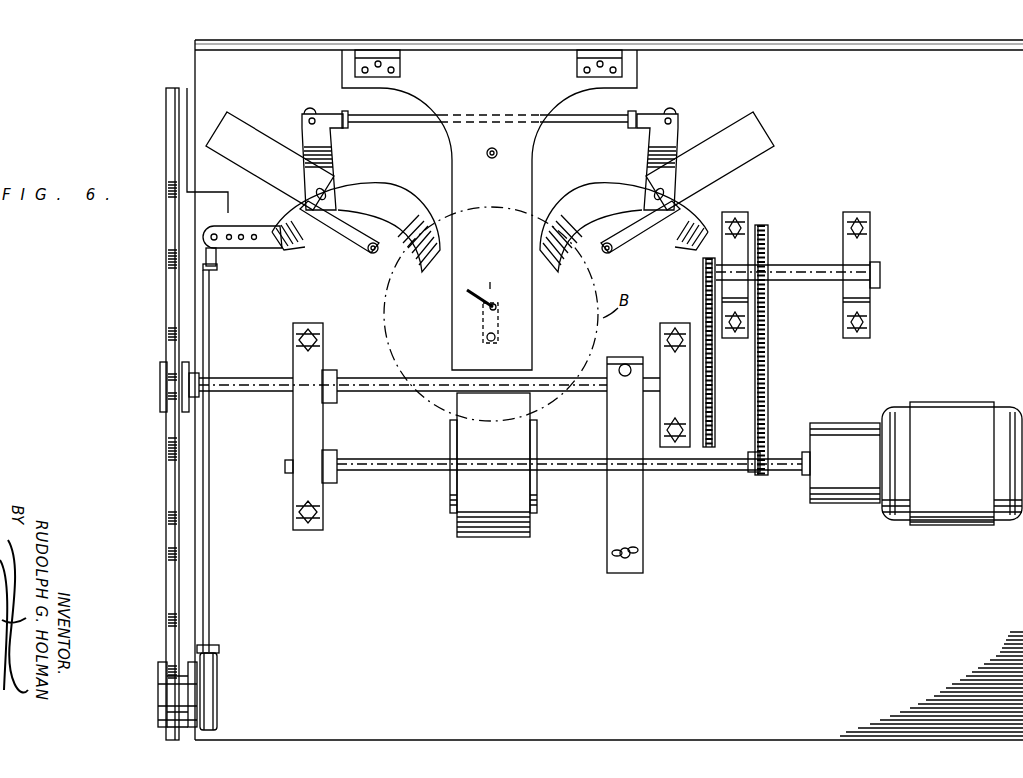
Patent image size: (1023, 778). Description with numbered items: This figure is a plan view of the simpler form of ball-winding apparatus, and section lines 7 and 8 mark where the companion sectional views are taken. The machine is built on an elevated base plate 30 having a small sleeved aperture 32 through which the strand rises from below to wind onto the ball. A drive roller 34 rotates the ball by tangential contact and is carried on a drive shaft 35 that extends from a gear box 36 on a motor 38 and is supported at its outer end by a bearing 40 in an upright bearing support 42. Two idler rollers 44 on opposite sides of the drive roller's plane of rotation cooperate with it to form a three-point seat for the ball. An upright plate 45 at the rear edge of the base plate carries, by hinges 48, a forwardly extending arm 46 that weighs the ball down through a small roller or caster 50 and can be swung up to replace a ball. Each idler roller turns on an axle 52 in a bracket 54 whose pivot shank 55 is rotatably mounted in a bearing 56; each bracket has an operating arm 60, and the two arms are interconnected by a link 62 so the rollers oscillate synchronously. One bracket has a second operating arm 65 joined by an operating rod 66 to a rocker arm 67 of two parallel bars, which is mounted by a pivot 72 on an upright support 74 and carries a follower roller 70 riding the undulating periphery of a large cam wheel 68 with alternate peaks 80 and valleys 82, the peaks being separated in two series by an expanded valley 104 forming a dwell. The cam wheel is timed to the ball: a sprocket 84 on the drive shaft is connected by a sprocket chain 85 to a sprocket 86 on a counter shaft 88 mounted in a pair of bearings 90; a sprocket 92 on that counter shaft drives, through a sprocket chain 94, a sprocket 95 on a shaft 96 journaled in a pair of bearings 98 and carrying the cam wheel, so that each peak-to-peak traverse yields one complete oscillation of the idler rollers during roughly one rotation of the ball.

The section line 7- 7 is at (210, 130).
The section line 8- 8 is at (188, 12).
The base plate 30 is at (605, 390).
The sleeved aperture 32 is at (482, 286).
The drive roller 34 is at (482, 528).
The drive shaft 35 is at (418, 472).
The gear box 36 is at (854, 503).
The motor 38 is at (952, 410).
The bearing 40 is at (326, 476).
The upright bearing support 42 is at (308, 420).
The idler rollers 44 is at (397, 200).
The upright plate 45 is at (919, 46).
The arm 46 is at (489, 210).
The hinges 48 is at (400, 63).
The roller 50 is at (498, 320).
The axle 52 is at (375, 253).
The bracket 54 is at (330, 225).
The pivot shank 55 is at (330, 193).
The bearing 56 is at (262, 140).
The operating arm 60 is at (326, 135).
The link 62 is at (586, 122).
The second operating arm 65 is at (260, 245).
The operating rod 66 is at (210, 536).
The rocker arm 67 is at (156, 690).
The cam wheel 68 is at (165, 318).
The roller 70 is at (172, 668).
The pivot 72 is at (182, 710).
The upright support 74 is at (216, 706).
The peaks 80 is at (172, 383).
The valleys 82 is at (172, 453).
The sprocket 84 is at (755, 470).
The sprocket chain 85 is at (770, 380).
The sprocket 86 is at (768, 258).
The counter shaft 88 is at (810, 281).
The bearings 90 is at (726, 255).
The sprocket 92 is at (704, 270).
The sprocket chain 94 is at (705, 312).
The sprocket 95 is at (715, 423).
The shaft 96 is at (587, 385).
The bearings 98 is at (325, 375).
The expanded valley 104 is at (170, 287).